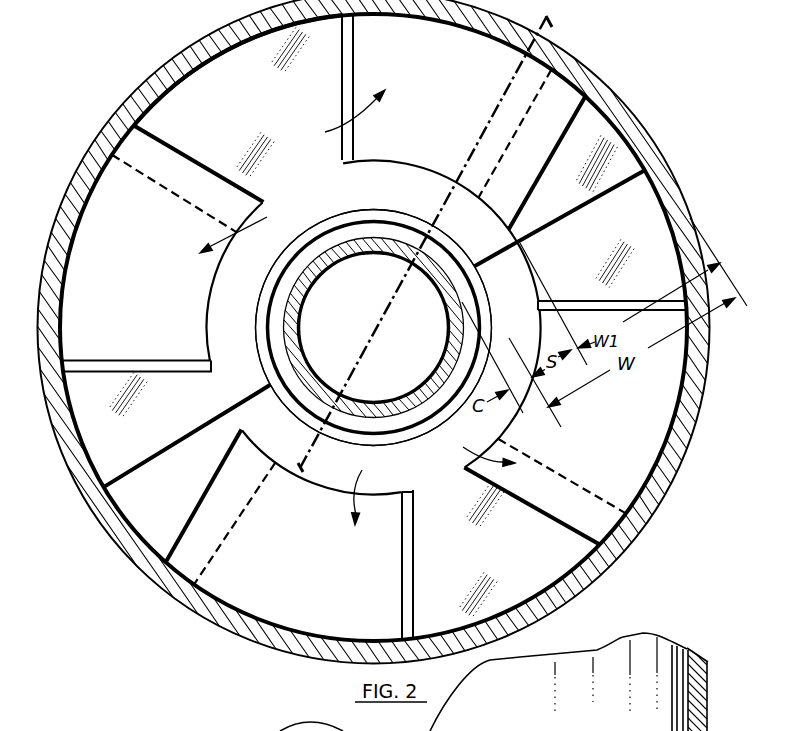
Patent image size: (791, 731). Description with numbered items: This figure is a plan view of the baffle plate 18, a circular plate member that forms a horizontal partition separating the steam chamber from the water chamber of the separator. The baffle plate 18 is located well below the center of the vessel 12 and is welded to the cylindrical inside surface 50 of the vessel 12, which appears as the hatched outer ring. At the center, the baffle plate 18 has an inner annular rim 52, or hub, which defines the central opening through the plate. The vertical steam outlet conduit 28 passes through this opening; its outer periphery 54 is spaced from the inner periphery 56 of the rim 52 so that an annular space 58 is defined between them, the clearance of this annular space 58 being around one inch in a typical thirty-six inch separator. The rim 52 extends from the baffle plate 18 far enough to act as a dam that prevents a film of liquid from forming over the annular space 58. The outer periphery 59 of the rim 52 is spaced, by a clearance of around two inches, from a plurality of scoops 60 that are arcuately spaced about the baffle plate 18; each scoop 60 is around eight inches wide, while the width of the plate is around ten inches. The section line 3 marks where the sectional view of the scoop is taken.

The casing 12 is at (143, 87).
The chamber 18 is at (163, 433).
The shaft bushing 28 is at (380, 249).
The casing inner surface 50 is at (177, 88).
The hub sleeve 52 is at (391, 213).
The shaft bore 54 is at (338, 396).
The hub ring 56 is at (348, 228).
The bearing ring 58 is at (302, 386).
The annular gap 59 is at (257, 294).
The flow direction arrows 60 is at (357, 307).
The section line 3- 3 is at (532, 14).